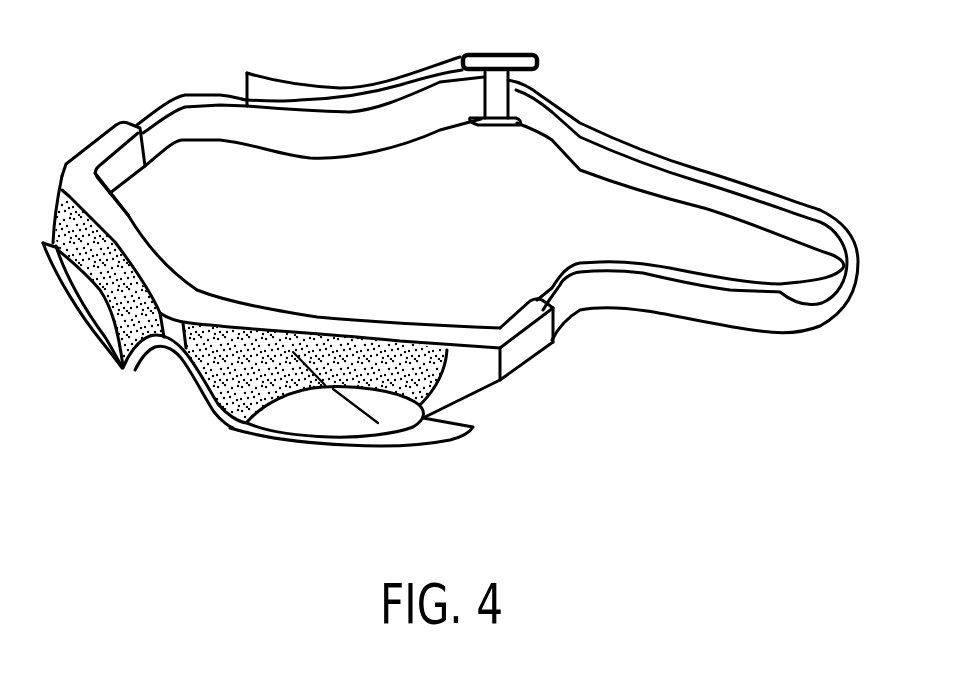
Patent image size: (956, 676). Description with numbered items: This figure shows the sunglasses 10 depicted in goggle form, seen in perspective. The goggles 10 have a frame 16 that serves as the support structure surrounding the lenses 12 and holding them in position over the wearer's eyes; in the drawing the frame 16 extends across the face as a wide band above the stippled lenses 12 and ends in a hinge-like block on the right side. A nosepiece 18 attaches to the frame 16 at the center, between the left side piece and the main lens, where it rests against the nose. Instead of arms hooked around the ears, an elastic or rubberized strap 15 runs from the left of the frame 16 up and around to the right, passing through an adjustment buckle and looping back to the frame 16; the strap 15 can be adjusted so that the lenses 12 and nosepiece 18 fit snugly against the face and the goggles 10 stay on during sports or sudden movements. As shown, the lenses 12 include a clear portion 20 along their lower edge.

The sunglasses 10 is at (231, 486).
The primary lenses 12 is at (322, 353).
The elastic or rubberized strap 15 is at (314, 90).
The frame 16 is at (467, 382).
The nosepiece 18 is at (190, 370).
The clear portion 20 is at (324, 415).